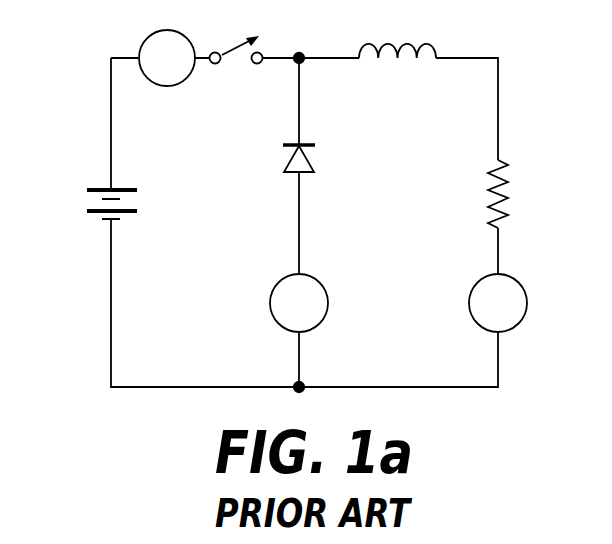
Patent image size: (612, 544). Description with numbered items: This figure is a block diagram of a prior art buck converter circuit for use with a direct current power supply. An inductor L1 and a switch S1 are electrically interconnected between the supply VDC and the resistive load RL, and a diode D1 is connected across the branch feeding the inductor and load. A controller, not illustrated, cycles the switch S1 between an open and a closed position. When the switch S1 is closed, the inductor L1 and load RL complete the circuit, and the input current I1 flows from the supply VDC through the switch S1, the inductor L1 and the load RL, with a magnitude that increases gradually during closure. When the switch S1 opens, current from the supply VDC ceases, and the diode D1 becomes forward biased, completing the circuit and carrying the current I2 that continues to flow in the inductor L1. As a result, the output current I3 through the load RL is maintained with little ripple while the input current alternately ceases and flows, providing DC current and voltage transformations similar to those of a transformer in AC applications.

The supply VDC is at (83, 223).
The current I1 is at (167, 58).
The switch S1 is at (236, 32).
The inductor L1 is at (397, 29).
The diode D1 is at (322, 170).
The resistive load RL is at (522, 197).
The current I2 is at (299, 303).
The output current I3 is at (498, 303).